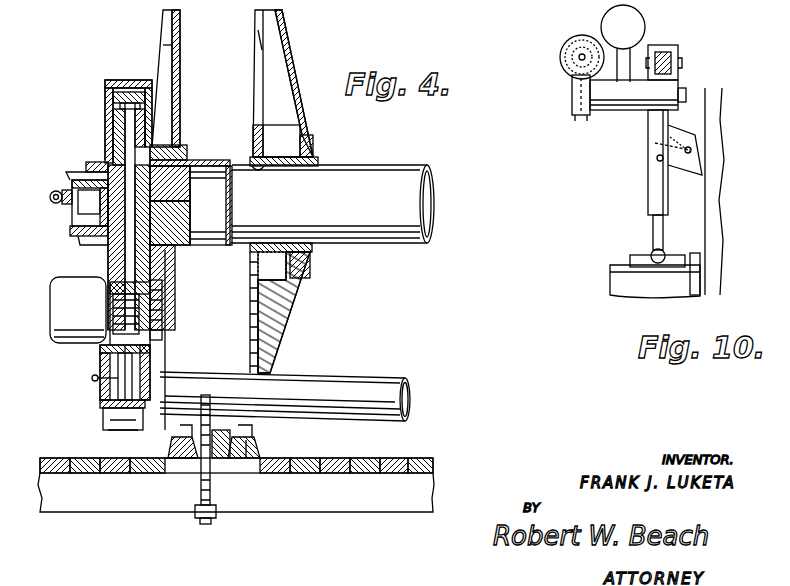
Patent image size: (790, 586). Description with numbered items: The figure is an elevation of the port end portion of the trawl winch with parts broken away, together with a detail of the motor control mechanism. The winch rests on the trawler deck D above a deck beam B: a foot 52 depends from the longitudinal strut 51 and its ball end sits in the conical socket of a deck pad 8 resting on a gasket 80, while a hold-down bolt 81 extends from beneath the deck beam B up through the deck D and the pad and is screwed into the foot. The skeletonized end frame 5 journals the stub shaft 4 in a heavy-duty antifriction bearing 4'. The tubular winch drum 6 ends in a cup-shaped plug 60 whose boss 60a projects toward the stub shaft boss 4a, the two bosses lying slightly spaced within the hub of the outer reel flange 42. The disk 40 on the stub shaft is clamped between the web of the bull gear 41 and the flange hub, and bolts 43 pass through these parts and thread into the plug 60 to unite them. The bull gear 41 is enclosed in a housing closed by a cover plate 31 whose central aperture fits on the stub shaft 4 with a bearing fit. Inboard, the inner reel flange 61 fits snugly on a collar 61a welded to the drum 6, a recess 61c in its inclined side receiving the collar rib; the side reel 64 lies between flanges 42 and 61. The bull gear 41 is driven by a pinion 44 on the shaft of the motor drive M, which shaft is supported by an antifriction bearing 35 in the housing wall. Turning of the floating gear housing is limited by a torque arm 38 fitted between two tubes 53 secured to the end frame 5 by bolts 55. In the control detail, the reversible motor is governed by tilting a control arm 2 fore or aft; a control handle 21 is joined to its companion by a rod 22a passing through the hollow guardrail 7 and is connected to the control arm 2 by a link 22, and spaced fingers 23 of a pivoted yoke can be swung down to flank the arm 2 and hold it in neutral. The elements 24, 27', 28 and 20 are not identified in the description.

In FIG. 4, the outer reel flange 42 is at (178, 26).
In FIG. 4, the side reel 64 is at (233, 53).
In FIG. 4, the bull gear 41 is at (120, 106).
In FIG. 4, the housing cover plate 31 is at (118, 127).
In FIG. 4, the stub axle boss 4a is at (172, 252).
In FIG. 4, the stub shaft disk 40 is at (158, 148).
In FIG. 4, the bolts 43 is at (162, 165).
In FIG. 4, the cup-shaped plug 60 is at (186, 204).
In FIG. 4, the plug boss 60a is at (230, 190).
In FIG. 4, the winch drum 6 is at (372, 180).
In FIG. 4, the inner reel flange 61 is at (263, 33).
In FIG. 4, the collar 61a is at (253, 162).
In FIG. 4, the recess 61c is at (310, 148).
In FIG. 4, the stub shaft 4 is at (77, 210).
In FIG. 4, the antifriction bearing 4' is at (85, 153).
In FIG. 4, the guardrail 7 is at (52, 192).
In FIG. 10, the guardrail 7 is at (568, 45).
In FIG. 4, the motor drive M is at (66, 305).
In FIG. 4, the antifriction bearing 35 is at (150, 298).
In FIG. 4, the pinion 44 is at (150, 312).
In FIG. 4, the torque arm 38 is at (110, 364).
In FIG. 4, the tubes 53 is at (110, 388).
In FIG. 4, the bolts 55 is at (92, 378).
In FIG. 4, the end frame 5 is at (100, 410).
In FIG. 4, the deck pad 8 is at (168, 446).
In FIG. 4, the foot 52 is at (252, 445).
In FIG. 4, the hold-down bolt 81 is at (205, 475).
In FIG. 4, the gasket 80 is at (248, 470).
In FIG. 4, the strut 51 is at (346, 387).
In FIG. 4, the deck D is at (378, 458).
In FIG. 4, the deck beam B is at (368, 505).
In FIG. 10, the control handle 21 is at (638, 32).
In FIG. 10, the link 22 is at (660, 85).
In FIG. 10, the rod 22a is at (565, 62).
In FIG. 10, the handle arm 24 is at (572, 97).
In FIG. 10, the fingers 23 is at (688, 125).
In FIG. 10, the control arm 2 is at (648, 136).
In FIG. 10, the pivot hole 27' is at (650, 162).
In FIG. 10, the bracket 28 is at (690, 168).
In FIG. 10, the base 20 is at (615, 265).